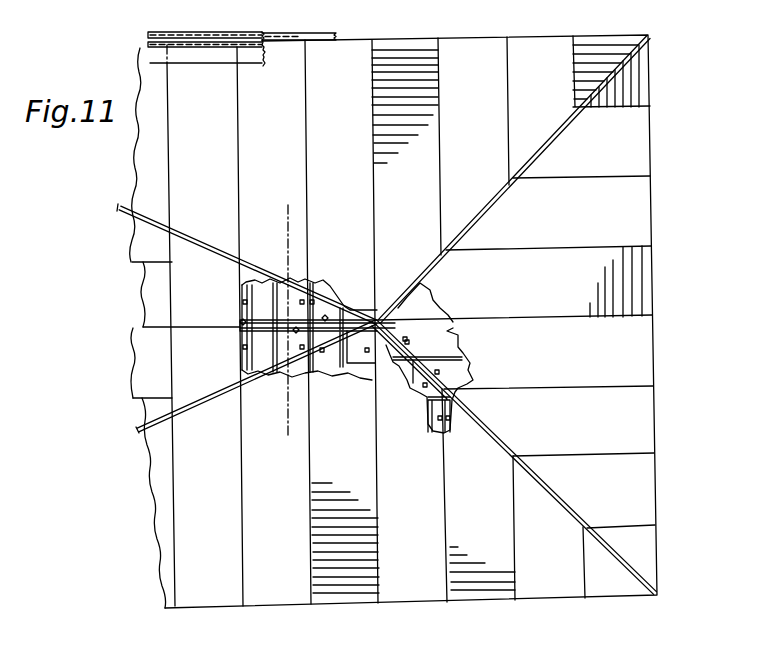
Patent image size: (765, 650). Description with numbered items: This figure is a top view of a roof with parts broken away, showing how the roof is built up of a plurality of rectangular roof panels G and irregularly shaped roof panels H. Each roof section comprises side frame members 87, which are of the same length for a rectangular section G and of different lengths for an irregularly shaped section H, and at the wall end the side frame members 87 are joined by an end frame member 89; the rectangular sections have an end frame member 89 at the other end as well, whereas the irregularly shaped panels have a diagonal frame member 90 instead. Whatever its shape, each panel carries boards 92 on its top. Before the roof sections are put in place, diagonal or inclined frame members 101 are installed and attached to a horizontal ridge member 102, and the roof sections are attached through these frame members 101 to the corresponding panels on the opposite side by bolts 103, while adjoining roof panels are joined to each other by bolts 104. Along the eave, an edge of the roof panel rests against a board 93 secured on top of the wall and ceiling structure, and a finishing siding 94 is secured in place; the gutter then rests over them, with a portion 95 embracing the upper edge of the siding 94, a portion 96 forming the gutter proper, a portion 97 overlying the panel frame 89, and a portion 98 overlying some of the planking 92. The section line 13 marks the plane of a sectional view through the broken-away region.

The side frame member 87 is at (243, 285).
The end frame member 89 is at (263, 332).
The diagonal frame member 90 is at (250, 318).
The boards 92 is at (415, 82).
The board 93 is at (313, 37).
The finishing siding 94 is at (273, 35).
The gutter portion 95 is at (197, 32).
The gutter proper portion 96 is at (150, 47).
The gutter portion overlying frame 97 is at (218, 43).
The gutter portion overlying planking 98 is at (153, 58).
The diagonal frame member 101 is at (125, 218).
The ridge member 102 is at (365, 316).
The bolt 103 is at (233, 317).
The bolt 104 is at (313, 302).
The section line 13 is at (265, 213).
The irregularly shaped roof panel H is at (145, 157).
The rectangular roof panel G is at (346, 65).